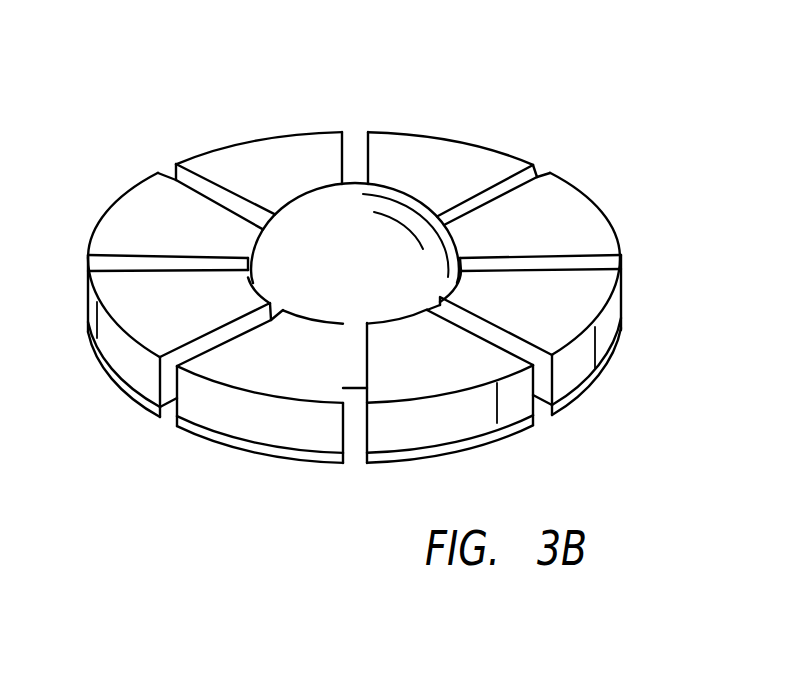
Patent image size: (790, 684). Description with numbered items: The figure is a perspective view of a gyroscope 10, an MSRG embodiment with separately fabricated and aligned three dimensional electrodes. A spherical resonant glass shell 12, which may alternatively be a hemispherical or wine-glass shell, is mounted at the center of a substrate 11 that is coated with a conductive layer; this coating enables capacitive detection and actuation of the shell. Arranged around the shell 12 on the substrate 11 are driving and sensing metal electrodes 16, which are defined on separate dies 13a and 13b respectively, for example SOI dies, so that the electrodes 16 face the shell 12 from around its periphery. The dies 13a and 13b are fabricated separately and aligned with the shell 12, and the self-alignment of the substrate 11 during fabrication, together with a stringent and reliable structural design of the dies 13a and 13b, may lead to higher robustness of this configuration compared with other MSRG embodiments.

The gyroscope 10 is at (336, 494).
The substrate 11 is at (560, 407).
The spherical resonant glass shell 12 is at (362, 205).
The die 13a is at (265, 147).
The die 13b is at (153, 218).
The driving and sensing metal electrodes 16 is at (245, 427).